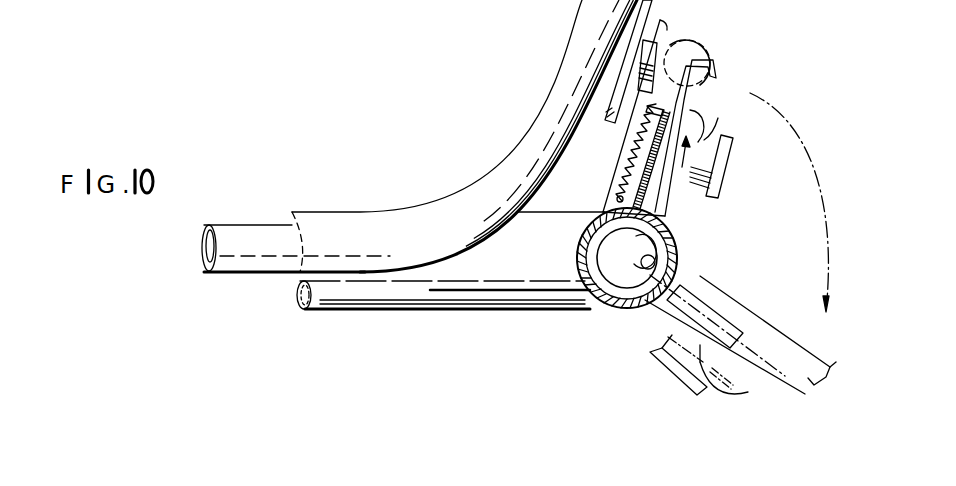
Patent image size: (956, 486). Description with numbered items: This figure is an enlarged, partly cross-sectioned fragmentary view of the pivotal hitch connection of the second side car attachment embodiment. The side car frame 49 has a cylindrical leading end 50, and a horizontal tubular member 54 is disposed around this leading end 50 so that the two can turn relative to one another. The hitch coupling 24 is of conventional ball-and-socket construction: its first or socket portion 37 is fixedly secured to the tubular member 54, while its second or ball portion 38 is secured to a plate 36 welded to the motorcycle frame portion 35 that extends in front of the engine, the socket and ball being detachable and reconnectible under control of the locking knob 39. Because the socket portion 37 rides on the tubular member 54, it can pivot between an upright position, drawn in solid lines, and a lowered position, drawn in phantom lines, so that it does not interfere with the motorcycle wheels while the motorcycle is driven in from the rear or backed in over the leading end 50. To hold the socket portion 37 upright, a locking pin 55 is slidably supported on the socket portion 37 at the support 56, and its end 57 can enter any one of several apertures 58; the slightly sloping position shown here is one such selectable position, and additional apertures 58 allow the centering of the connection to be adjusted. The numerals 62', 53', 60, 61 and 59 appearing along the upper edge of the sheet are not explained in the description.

The tube end 62' is at (243, 9).
The sleeve 53' is at (323, 9).
The collar 60 is at (402, 7).
The ring 61 is at (448, 6).
The cap 59 is at (493, 6).
The motorcycle frame portion 35 is at (513, 158).
The plate 36 is at (630, 58).
The socket portion 37 is at (683, 40).
The ball portion 38 is at (710, 50).
The hitch coupling 24 is at (732, 72).
The locking pin 55 is at (692, 106).
The slidable support 56 is at (703, 173).
The locking knob 39 is at (724, 178).
The horizontal tubular member 54 is at (662, 236).
The leading end 50 is at (655, 256).
The pin end 57 is at (686, 250).
The apertures 58 is at (619, 232).
The frame 49 is at (407, 313).